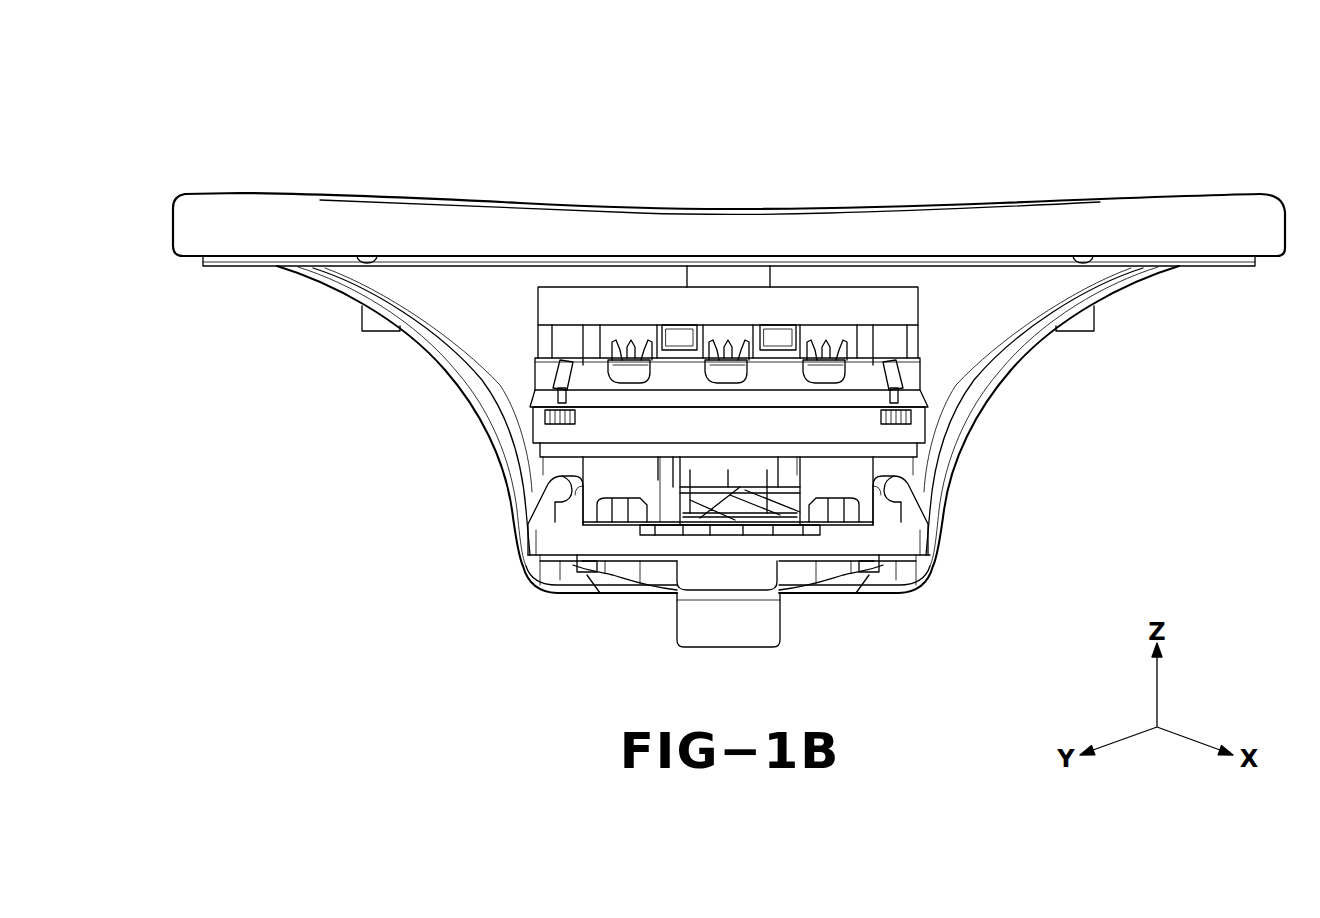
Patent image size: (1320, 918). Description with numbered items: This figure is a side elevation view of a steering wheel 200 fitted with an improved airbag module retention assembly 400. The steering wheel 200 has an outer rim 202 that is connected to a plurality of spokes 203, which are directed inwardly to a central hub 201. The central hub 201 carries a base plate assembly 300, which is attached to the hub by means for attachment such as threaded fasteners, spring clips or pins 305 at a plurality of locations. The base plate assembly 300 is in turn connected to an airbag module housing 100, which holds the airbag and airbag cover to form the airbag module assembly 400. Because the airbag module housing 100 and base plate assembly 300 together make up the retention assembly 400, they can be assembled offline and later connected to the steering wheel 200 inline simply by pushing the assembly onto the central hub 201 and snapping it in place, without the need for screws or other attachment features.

The airbag module housing 100 is at (930, 311).
The steering wheel 200 is at (729, 362).
The central hub 201 is at (556, 591).
The outer rim 202 is at (672, 234).
The spokes 203 is at (458, 372).
The base plate assembly 300 is at (922, 524).
The threaded fasteners, spring clips or pins 305 is at (596, 592).
The airbag module retention assembly 400 is at (526, 302).